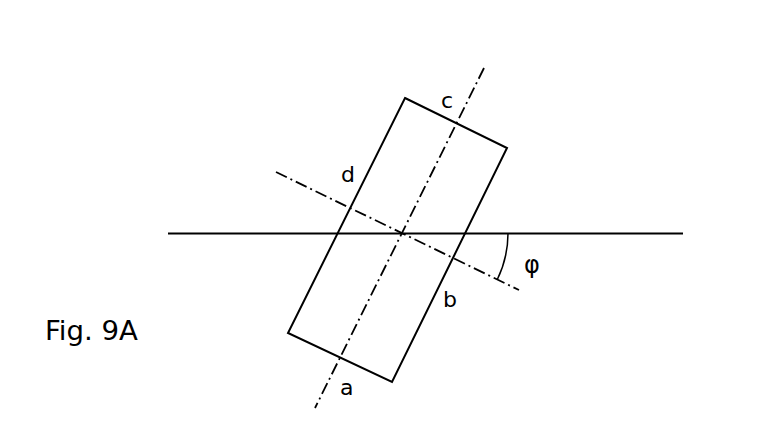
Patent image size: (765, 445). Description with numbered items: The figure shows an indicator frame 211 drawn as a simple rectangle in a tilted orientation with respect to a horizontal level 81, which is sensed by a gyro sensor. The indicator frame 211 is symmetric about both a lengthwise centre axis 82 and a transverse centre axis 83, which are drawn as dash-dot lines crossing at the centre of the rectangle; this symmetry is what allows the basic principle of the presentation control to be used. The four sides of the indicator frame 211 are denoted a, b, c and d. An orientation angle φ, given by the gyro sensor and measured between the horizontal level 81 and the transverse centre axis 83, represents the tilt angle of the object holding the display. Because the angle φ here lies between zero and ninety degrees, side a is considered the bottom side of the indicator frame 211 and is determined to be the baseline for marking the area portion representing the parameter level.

The horizontal level 81 is at (632, 234).
The lengthwise centre axis 82 is at (475, 78).
The transverse centre axis 83 is at (297, 185).
The indicator frame 211 is at (488, 137).